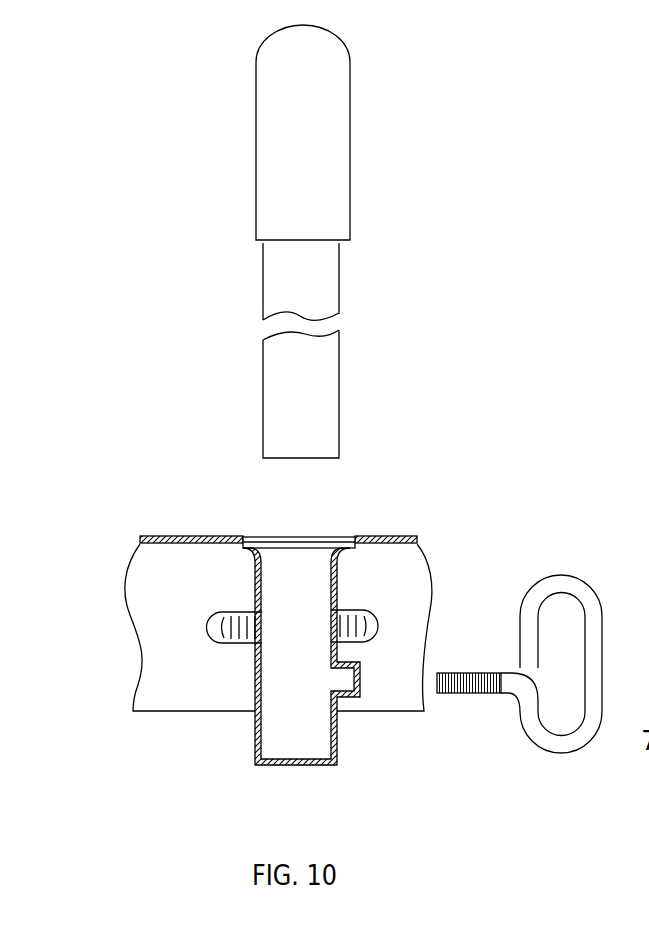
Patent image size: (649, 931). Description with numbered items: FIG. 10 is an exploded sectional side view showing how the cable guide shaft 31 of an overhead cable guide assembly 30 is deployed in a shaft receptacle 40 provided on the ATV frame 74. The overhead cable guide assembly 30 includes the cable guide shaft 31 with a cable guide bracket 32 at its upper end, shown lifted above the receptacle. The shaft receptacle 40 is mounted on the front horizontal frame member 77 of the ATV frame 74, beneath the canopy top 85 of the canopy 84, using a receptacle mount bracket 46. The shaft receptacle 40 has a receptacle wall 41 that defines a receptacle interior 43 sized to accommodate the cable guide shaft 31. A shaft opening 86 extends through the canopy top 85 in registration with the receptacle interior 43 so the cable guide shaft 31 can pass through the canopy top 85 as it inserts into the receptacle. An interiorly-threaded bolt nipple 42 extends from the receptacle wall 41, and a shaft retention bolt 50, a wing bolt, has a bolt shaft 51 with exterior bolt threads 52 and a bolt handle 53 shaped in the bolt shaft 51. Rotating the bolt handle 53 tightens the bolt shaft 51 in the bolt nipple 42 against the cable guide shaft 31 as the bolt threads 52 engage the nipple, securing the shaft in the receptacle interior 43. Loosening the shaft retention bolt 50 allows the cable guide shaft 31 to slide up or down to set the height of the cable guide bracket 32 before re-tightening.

The overhead cable guide assembly 30 is at (288, 241).
The cable guide shaft 31 is at (273, 297).
The cable guide bracket 32 is at (360, 187).
The shaft receptacle 40 is at (284, 683).
The receptacle wall 41 is at (338, 741).
The bolt nipple 42 is at (362, 668).
The receptacle interior 43 is at (298, 745).
The receptacle mount bracket 46 is at (236, 612).
The shaft retention bolt 50 is at (543, 694).
The bolt shaft 51 is at (504, 696).
The bolt threads 52 is at (478, 673).
The bolt handle 53 is at (588, 665).
The ATV frame 74 is at (428, 722).
The front horizontal frame member 77 is at (187, 696).
The canopy 84 is at (397, 523).
The canopy top 85 is at (291, 507).
The shaft opening 86 is at (294, 497).